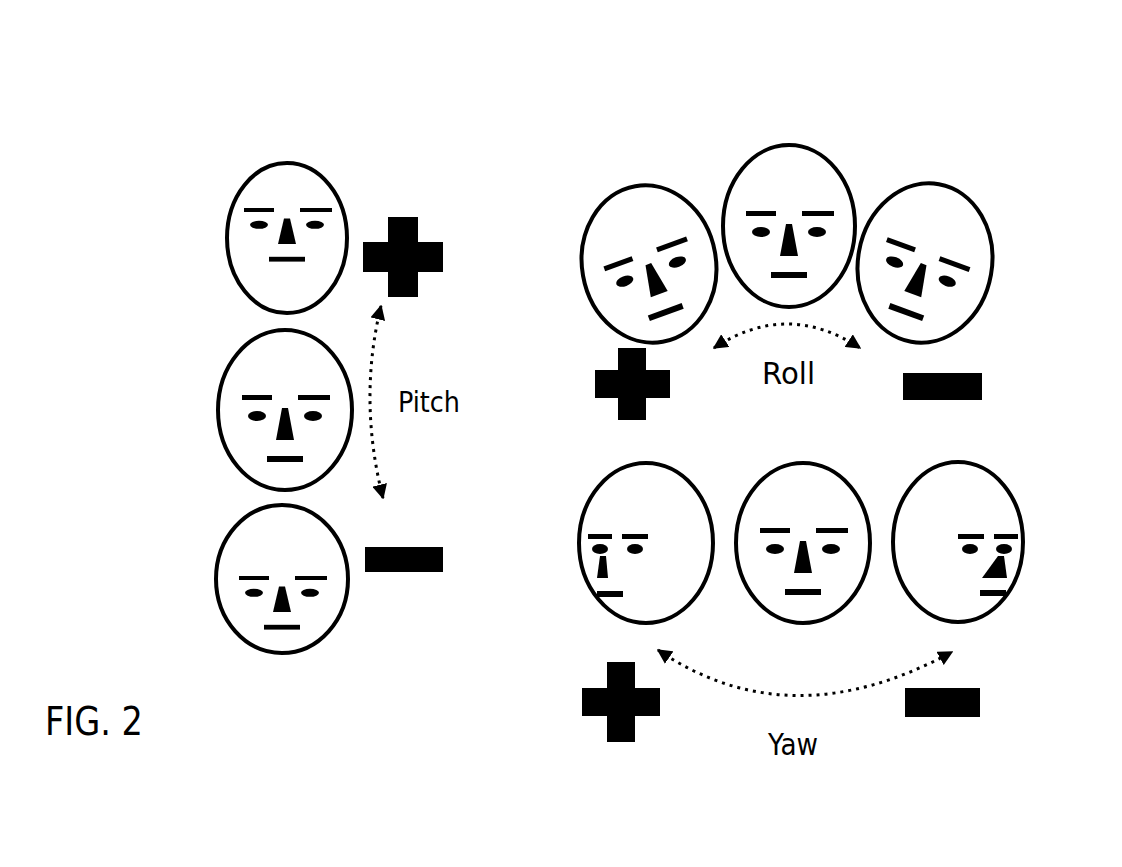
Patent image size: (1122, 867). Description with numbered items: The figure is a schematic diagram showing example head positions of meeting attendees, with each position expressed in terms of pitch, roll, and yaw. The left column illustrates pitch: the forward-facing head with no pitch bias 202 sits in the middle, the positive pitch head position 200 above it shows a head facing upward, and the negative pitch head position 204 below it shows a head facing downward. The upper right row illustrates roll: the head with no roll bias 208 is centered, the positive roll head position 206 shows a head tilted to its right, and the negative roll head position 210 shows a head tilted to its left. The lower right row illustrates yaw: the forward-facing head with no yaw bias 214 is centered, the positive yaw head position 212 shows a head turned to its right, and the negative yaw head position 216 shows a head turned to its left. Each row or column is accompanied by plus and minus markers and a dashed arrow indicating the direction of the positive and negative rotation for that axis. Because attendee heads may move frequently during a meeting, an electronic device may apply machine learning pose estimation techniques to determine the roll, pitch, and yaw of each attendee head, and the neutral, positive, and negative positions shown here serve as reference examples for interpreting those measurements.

The positive pitch head position 200 is at (227, 235).
The forward-facing head with no pitch bias 202 is at (218, 423).
The negative pitch head position 204 is at (223, 550).
The positive roll head position 206 is at (653, 187).
The head with no roll bias 208 is at (808, 150).
The negative roll head position 210 is at (928, 183).
The positive yaw head position 212 is at (603, 602).
The forward-facing head with no yaw bias 214 is at (808, 620).
The negative yaw head position 216 is at (1013, 513).